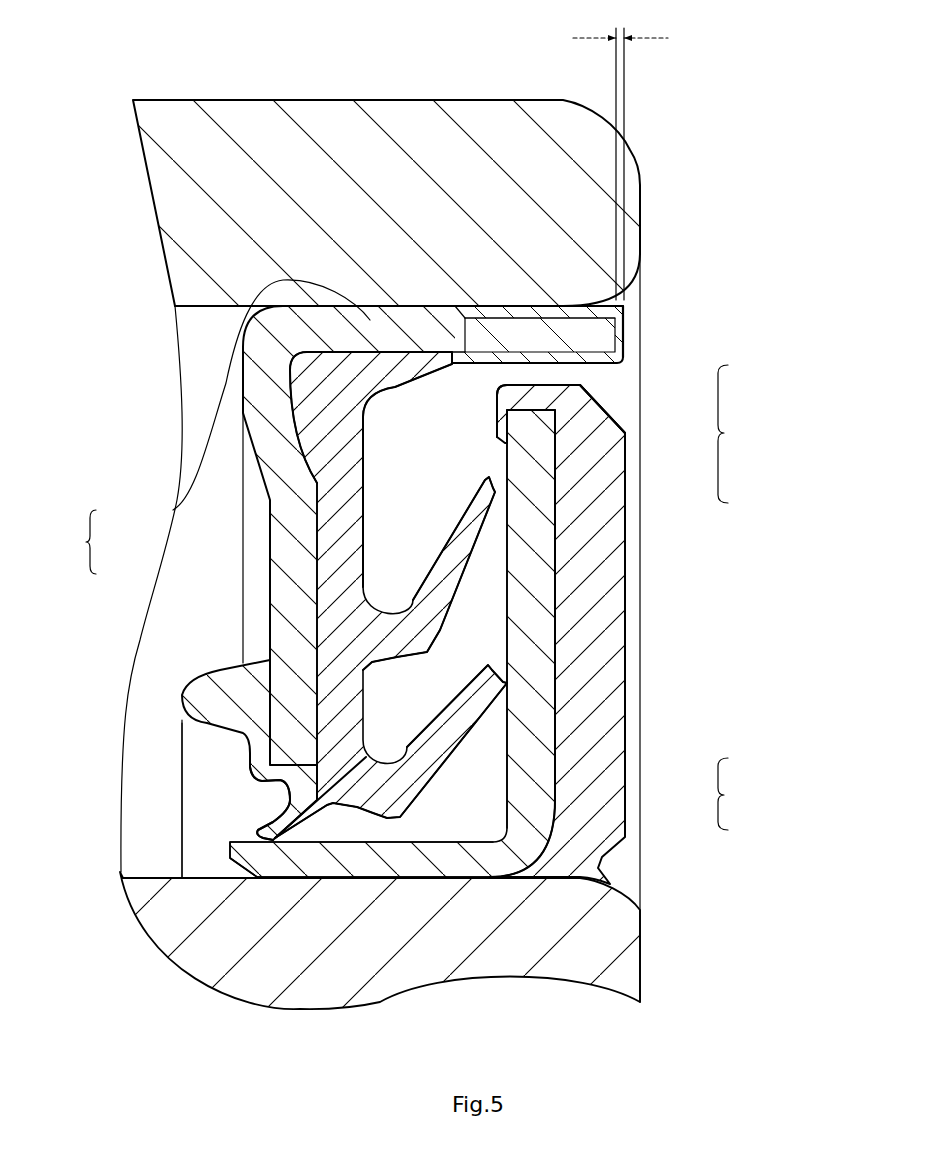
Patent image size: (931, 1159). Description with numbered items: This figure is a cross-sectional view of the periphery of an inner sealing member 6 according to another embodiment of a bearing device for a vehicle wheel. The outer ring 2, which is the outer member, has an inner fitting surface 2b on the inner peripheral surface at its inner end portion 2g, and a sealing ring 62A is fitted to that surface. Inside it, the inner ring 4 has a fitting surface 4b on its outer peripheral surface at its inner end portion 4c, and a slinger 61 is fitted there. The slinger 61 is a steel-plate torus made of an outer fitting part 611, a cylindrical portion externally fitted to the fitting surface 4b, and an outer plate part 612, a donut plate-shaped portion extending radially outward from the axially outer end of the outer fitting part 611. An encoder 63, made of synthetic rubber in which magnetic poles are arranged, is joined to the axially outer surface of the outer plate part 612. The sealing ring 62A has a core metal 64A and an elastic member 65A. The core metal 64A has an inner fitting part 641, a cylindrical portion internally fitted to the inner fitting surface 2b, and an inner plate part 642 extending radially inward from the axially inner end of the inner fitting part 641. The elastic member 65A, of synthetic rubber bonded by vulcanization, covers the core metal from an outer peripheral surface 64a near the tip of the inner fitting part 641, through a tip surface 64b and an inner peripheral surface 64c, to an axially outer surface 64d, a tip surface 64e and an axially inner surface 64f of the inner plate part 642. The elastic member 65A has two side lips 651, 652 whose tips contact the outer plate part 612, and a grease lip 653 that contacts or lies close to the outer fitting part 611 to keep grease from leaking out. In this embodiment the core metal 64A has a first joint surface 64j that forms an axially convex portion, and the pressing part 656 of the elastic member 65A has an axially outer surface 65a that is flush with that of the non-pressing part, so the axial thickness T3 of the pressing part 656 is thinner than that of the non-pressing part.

The outer ring 2 is at (632, 151).
The inner end portion of the outer ring 2g is at (600, 205).
The inner fitting surface 2b is at (197, 308).
The axial thickness of the pressing part T3 is at (620, 156).
The inner ring 4 is at (643, 977).
The inner end portion of the inner ring 4c is at (620, 938).
The fitting surface 4b is at (150, 878).
The inner sealing member 6 is at (163, 790).
The core metal 64A is at (70, 542).
The inner fitting part 641 is at (173, 510).
The inner plate part 642 is at (283, 557).
The outer peripheral surface 64a is at (527, 318).
The tip surface 64b is at (632, 293).
The first joint surface 64j is at (627, 318).
The inner peripheral surface 64c is at (450, 354).
The axially outer surface 64d is at (318, 545).
The tip surface 64e is at (273, 783).
The axially inner surface 64f is at (267, 692).
The sealing ring 62A is at (268, 592).
The elastic member 65A is at (523, 595).
The axially outer surface of the pressing part 65a is at (624, 332).
The pressing part 656 is at (632, 352).
The side lip 651 is at (592, 428).
The side lip 652 is at (483, 502).
The grease lip 653 is at (400, 837).
The encoder 63 is at (607, 642).
The slinger 61 is at (494, 643).
The outer plate part 612 is at (540, 775).
The outer fitting part 611 is at (413, 870).